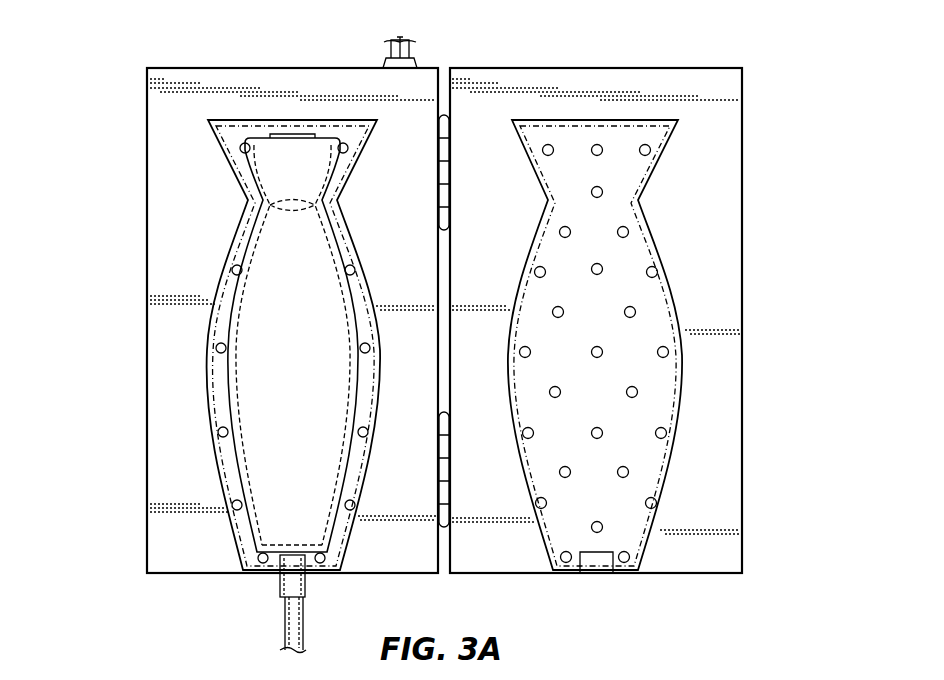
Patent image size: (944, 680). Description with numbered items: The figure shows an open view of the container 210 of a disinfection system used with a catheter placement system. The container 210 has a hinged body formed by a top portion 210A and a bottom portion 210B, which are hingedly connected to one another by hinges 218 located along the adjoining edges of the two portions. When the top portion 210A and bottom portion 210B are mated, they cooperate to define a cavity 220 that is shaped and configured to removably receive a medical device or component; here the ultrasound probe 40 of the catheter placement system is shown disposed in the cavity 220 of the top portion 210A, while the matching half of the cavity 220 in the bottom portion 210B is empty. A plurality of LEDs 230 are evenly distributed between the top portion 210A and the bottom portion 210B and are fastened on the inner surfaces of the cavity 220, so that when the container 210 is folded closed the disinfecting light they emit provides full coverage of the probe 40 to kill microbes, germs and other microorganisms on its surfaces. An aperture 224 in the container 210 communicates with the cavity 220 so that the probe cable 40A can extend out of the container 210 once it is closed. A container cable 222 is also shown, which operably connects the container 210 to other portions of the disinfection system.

The container 210 is at (132, 82).
The top portion 210A is at (165, 178).
The bottom portion 210B is at (720, 183).
The cavity 220 is at (237, 248).
The container cable 222 is at (383, 50).
The hinges 218 is at (448, 168).
The LEDs 230 is at (237, 505).
The ultrasound probe 40 is at (293, 343).
The aperture 224 is at (305, 577).
The probe cable 40A is at (281, 587).